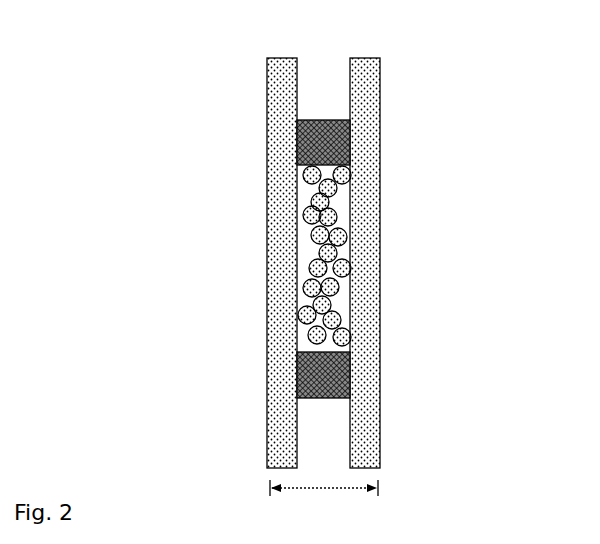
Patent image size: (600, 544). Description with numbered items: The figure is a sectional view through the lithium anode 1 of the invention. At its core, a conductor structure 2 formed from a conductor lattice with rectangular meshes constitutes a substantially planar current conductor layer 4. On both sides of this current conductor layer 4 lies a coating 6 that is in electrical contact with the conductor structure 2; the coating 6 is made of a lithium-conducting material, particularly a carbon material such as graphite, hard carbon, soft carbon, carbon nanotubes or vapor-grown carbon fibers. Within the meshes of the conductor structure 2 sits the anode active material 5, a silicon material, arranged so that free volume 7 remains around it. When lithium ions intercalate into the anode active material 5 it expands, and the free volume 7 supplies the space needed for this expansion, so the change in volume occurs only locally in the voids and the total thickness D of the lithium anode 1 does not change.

The lithium anode 1 is at (240, 78).
The conductor structure 2 is at (345, 375).
The current conductor layer 4 is at (325, 52).
The anode active material 5 is at (337, 213).
The coating 6 is at (367, 82).
The free volume 7 is at (348, 172).